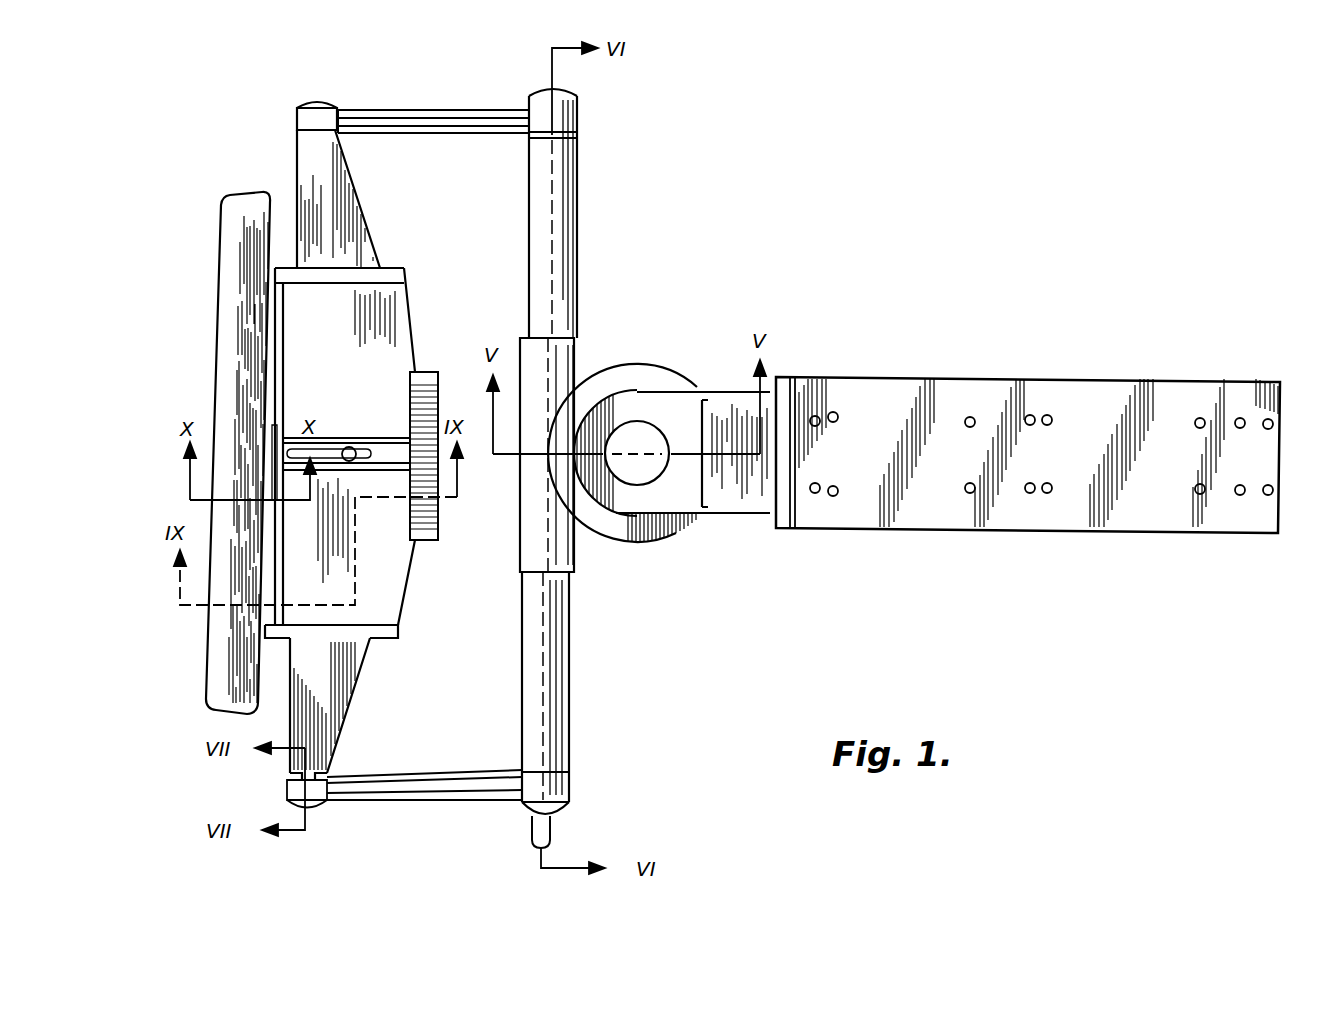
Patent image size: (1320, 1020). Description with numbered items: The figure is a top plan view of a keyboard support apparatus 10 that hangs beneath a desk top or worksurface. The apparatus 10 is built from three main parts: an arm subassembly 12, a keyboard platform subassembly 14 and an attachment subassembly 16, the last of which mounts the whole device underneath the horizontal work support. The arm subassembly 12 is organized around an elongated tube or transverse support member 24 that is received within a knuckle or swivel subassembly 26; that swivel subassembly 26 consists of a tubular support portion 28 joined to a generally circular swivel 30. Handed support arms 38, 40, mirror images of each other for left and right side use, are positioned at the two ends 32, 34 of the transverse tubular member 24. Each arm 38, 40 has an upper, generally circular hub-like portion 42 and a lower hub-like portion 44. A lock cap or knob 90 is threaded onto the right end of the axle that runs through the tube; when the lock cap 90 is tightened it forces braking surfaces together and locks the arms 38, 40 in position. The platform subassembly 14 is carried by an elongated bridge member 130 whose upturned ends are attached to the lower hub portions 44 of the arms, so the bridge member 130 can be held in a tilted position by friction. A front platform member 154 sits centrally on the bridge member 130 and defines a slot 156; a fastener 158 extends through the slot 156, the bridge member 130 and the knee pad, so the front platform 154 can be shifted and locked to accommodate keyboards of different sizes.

The keyboard support apparatus 10 is at (928, 224).
The arm subassembly 12 is at (608, 166).
The keyboard platform subassembly 14 is at (204, 206).
The attachment subassembly 16 is at (978, 350).
The transverse support member 24 is at (572, 234).
The swivel subassembly 26 is at (608, 368).
The tubular support portion 28 is at (574, 338).
The swivel 30 is at (648, 368).
The end of transverse tubular member 32 is at (530, 138).
The end of transverse tubular member 34 is at (568, 759).
The support arm 38 is at (430, 110).
The support arm 40 is at (440, 790).
The upper hub-like portion 42 is at (541, 113).
The lower hub-like portion 44 is at (322, 106).
The lock cap 90 is at (556, 822).
The bridge member 130 is at (298, 166).
The front platform member 154 is at (410, 292).
The slot 156 is at (330, 446).
The fastener 158 is at (352, 462).